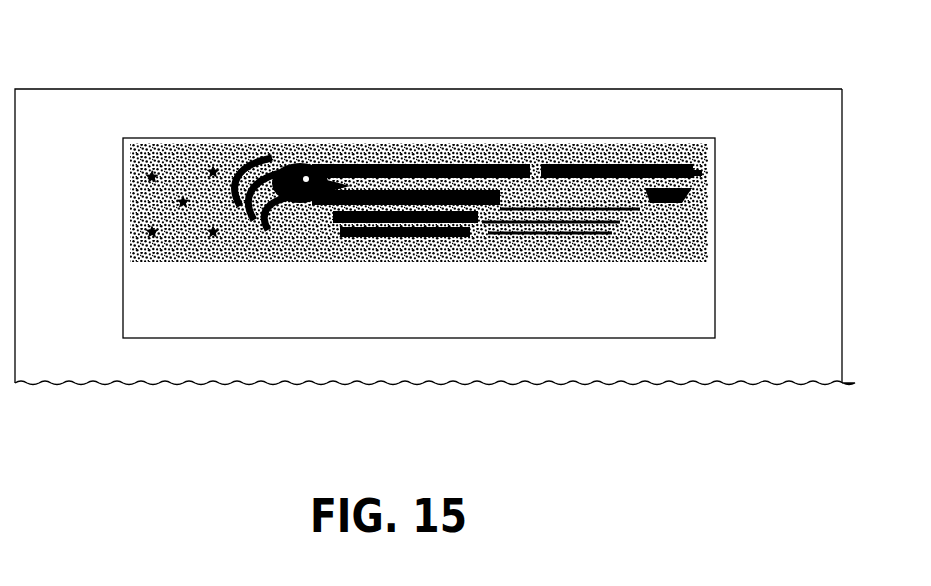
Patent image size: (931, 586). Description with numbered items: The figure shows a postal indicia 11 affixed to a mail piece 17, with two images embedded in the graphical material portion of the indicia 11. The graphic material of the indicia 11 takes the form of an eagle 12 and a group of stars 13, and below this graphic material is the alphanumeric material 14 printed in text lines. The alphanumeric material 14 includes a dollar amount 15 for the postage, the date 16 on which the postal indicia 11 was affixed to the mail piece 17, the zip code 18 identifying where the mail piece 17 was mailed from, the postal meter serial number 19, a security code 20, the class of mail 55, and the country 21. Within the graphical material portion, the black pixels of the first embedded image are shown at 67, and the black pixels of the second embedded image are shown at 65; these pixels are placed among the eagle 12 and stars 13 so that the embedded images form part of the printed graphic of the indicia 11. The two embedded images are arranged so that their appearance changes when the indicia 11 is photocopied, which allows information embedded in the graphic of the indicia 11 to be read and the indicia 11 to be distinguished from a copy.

The postal indicia 11 is at (606, 139).
The eagle 12 is at (290, 165).
The stars 13 is at (147, 233).
The alphanumeric material 14 is at (375, 377).
The dollar amount 15 is at (462, 302).
The date 16 is at (143, 323).
The mail piece 17 is at (112, 100).
The zip code 18 is at (690, 325).
The postal meter serial number 19 is at (835, 331).
The security code 20 is at (138, 297).
The country 21 is at (510, 273).
The class of mail 55 is at (287, 323).
The black pixels of image 41 65 is at (402, 160).
The black pixels of image 40 67 is at (135, 180).